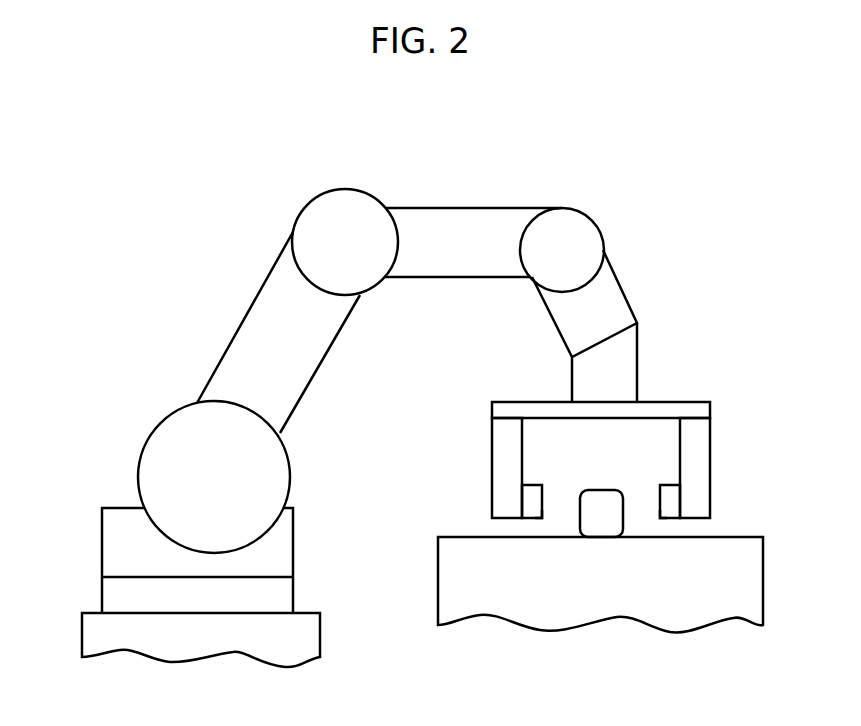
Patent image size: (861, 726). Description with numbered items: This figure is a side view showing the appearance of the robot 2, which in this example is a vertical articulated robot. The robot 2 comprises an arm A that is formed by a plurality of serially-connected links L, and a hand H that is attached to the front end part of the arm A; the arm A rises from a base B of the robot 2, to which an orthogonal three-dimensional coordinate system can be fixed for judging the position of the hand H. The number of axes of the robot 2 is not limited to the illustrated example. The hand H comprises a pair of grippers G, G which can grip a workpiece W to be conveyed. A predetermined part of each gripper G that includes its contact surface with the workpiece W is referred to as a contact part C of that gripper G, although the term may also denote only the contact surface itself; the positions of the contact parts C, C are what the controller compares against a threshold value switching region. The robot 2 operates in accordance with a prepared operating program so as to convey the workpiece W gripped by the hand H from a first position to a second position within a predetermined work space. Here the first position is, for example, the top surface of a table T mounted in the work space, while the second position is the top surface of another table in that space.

The robot 2 is at (466, 185).
The arm A is at (209, 313).
The base B is at (110, 598).
The links L is at (560, 303).
The hand H is at (731, 405).
The grippers G is at (530, 502).
The workpiece W is at (605, 502).
The table T is at (737, 580).
The contact part C is at (654, 512).